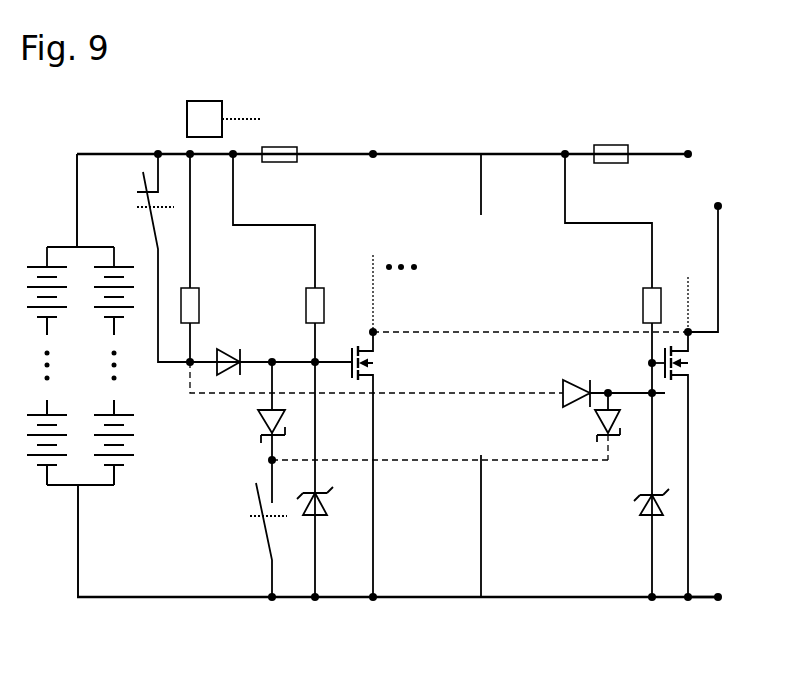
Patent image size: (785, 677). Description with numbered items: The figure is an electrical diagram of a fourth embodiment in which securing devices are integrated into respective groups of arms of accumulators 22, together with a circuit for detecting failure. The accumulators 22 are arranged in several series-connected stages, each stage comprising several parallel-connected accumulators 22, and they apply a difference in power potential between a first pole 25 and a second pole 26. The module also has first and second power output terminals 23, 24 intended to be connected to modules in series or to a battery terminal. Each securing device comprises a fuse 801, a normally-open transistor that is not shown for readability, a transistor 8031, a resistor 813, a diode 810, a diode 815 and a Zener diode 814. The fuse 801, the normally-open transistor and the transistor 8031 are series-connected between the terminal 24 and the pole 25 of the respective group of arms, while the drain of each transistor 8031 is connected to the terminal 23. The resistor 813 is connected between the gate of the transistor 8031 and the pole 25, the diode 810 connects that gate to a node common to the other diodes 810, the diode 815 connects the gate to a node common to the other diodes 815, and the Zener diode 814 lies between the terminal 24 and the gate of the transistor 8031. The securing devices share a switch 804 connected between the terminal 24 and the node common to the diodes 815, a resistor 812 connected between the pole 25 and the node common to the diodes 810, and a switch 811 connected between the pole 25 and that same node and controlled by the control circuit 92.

The accumulators 22 is at (27, 266).
The first power output terminal 23 is at (719, 201).
The second power output terminal 24 is at (722, 601).
The first pole 25 is at (77, 240).
The second pole 26 is at (78, 490).
The control circuit 92 is at (187, 118).
The fuse 801 is at (279, 147).
The transistor 8031 is at (378, 366).
The switch 804 is at (250, 525).
The diode 810 is at (228, 349).
The switch 811 is at (133, 176).
The resistor 812 is at (199, 305).
The resistor 813 is at (306, 305).
The Zener diode 814 is at (323, 513).
The diode 815 is at (262, 424).